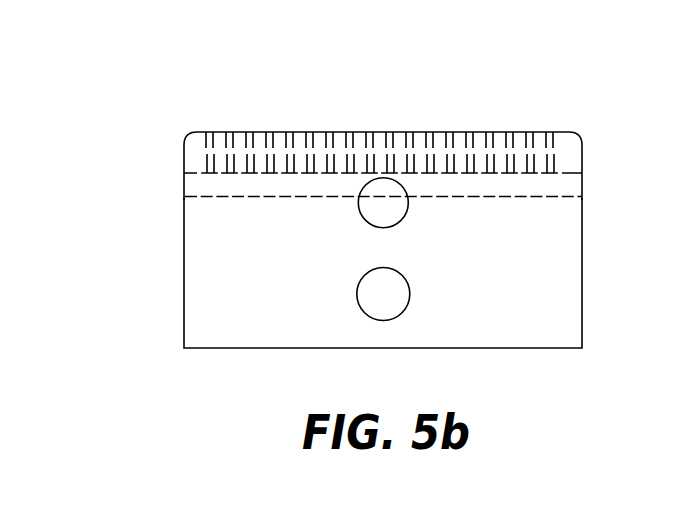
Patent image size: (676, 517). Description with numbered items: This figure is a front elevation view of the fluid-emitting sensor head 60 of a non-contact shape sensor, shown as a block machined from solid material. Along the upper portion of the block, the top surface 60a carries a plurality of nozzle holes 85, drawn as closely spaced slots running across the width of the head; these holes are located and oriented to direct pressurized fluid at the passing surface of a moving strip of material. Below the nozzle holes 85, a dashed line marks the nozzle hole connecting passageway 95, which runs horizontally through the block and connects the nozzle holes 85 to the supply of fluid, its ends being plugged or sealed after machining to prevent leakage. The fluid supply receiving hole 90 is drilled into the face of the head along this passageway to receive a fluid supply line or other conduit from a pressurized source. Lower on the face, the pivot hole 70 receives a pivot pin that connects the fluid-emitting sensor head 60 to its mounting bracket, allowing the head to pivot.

The fluid-emitting sensor head 60 is at (358, 182).
The top surface 60a is at (204, 131).
The nozzle holes 85 is at (518, 137).
The nozzle hole connecting passageway 95 is at (575, 185).
The fluid supply receiving hole 90 is at (400, 216).
The pivot hole 70 is at (405, 300).